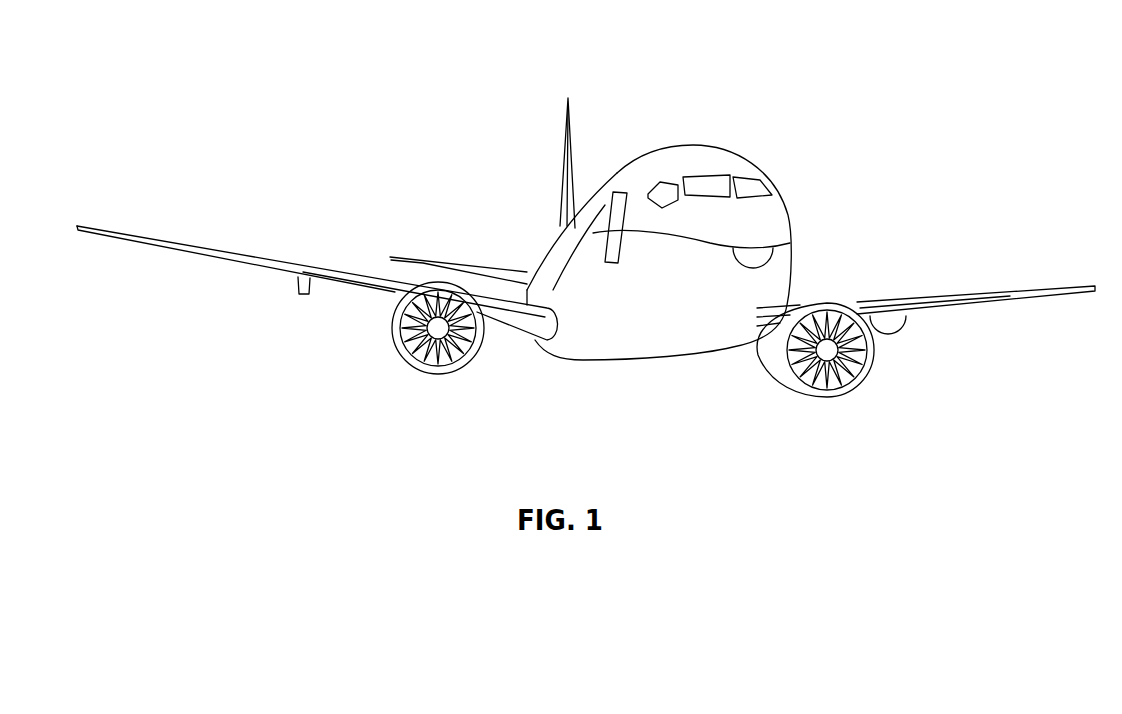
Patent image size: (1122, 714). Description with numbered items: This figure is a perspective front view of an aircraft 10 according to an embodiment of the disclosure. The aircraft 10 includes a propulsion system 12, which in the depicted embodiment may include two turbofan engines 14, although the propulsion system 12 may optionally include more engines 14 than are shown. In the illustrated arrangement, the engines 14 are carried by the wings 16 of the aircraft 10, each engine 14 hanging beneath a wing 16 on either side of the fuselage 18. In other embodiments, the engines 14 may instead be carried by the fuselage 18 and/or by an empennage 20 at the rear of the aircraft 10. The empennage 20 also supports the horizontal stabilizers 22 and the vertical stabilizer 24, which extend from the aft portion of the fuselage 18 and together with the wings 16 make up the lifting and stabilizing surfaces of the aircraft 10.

The aircraft 10 is at (335, 49).
The propulsion system 12 is at (905, 386).
The turbofan engine 14 is at (432, 376).
The wing 16 is at (215, 252).
The fuselage 18 is at (790, 210).
The empennage 20 is at (555, 243).
The horizontal stabilizer 22 is at (432, 262).
The vertical stabilizer 24 is at (565, 136).